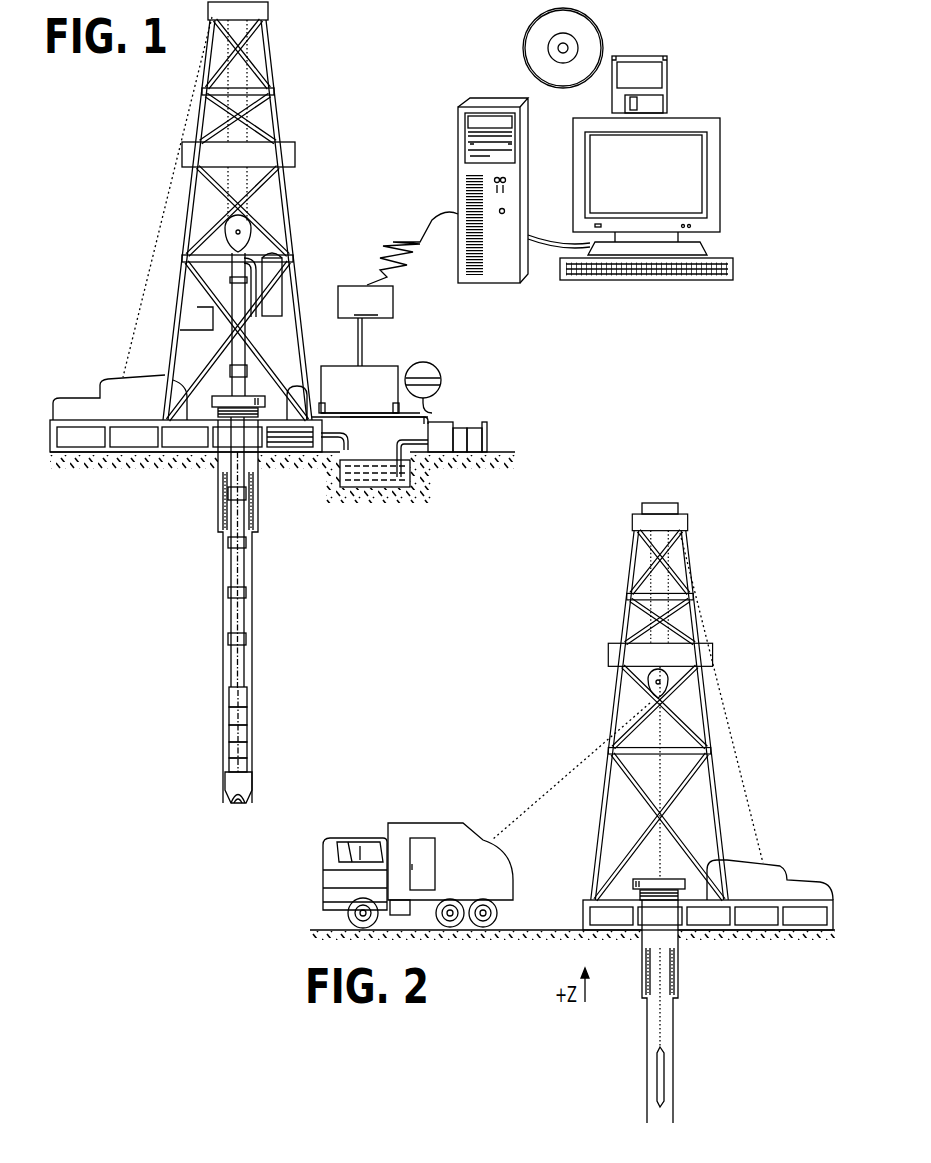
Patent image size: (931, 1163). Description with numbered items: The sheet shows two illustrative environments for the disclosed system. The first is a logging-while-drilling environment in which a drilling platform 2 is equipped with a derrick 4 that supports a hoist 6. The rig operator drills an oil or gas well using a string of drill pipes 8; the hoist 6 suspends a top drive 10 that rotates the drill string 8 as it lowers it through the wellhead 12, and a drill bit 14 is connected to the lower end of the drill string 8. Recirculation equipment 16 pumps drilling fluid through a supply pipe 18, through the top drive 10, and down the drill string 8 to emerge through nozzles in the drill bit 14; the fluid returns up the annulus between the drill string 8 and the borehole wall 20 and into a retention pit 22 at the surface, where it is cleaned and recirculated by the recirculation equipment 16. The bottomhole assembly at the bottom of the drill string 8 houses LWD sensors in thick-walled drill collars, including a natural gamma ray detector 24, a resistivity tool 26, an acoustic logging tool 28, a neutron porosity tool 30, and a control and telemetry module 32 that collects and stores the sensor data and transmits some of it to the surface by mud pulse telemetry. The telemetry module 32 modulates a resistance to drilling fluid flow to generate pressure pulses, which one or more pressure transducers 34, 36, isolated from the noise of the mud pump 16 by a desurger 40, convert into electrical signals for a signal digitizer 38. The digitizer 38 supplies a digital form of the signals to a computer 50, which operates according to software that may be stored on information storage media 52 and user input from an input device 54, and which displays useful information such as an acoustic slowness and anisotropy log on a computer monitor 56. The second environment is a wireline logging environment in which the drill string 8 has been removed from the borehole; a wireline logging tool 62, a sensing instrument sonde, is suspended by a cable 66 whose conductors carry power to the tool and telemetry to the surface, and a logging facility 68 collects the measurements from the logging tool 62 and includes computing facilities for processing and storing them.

In FIG. 1, the drilling platform 2 is at (50, 427).
In FIG. 2, the drilling platform 2 is at (583, 910).
In FIG. 1, the derrick 4 is at (278, 111).
In FIG. 2, the derrick 4 is at (595, 868).
In FIG. 1, the hoist 6 is at (252, 232).
In FIG. 2, the hoist 6 is at (647, 682).
In FIG. 1, the drill string 8 is at (242, 575).
In FIG. 1, the top drive 10 is at (237, 297).
In FIG. 1, the wellhead 12 is at (215, 395).
In FIG. 2, the wellhead 12 is at (643, 880).
In FIG. 1, the drill bit 14 is at (248, 793).
In FIG. 1, the recirculation equipment 16 is at (440, 425).
In FIG. 1, the supply pipe 18 is at (405, 418).
In FIG. 1, the borehole wall 20 is at (252, 581).
In FIG. 1, the mud pit 22 is at (352, 478).
In FIG. 1, the natural gamma ray detector 24 is at (232, 768).
In FIG. 1, the resistivity tool 26 is at (245, 746).
In FIG. 1, the acoustic logging tool 28 is at (232, 728).
In FIG. 1, the neutron porosity tool 30 is at (245, 713).
In FIG. 1, the control and telemetry module 32 is at (230, 694).
In FIG. 1, the pressure transducer 34 is at (324, 403).
In FIG. 1, the pressure transducer 36 is at (395, 403).
In FIG. 1, the signal digitizer 38 is at (365, 326).
In FIG. 1, the desurger 40 is at (418, 362).
In FIG. 1, the computer 50 is at (528, 210).
In FIG. 1, the information storage media 52 is at (623, 55).
In FIG. 1, the input device 54 is at (713, 280).
In FIG. 1, the computer monitor 56 is at (715, 232).
In FIG. 2, the wireline logging tool 62 is at (663, 1068).
In FIG. 2, the cable 66 is at (592, 752).
In FIG. 2, the logging facility 68 is at (455, 823).